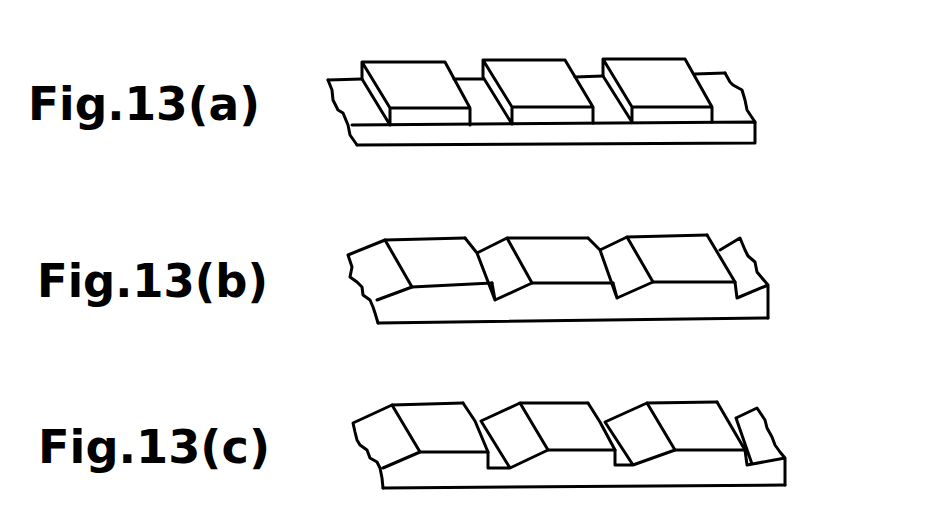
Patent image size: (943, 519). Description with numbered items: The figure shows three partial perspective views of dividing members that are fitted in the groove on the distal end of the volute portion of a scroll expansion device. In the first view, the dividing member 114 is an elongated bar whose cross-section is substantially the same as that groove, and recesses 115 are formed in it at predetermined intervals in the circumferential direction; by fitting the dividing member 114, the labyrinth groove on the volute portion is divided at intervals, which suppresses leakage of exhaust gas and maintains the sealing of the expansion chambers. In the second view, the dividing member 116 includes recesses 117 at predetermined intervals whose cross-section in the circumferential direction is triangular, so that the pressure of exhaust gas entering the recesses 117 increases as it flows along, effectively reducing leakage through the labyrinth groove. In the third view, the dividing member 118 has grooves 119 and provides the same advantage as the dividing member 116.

In FIG. 13A, the dividing member 114 is at (730, 82).
In FIG. 13A, the recesses 115 is at (473, 85).
In FIG. 13B, the dividing member 116 is at (750, 252).
In FIG. 13B, the recesses 117 is at (495, 252).
In FIG. 13C, the dividing member 118 is at (765, 420).
In FIG. 13C, the grooves 119 is at (504, 420).